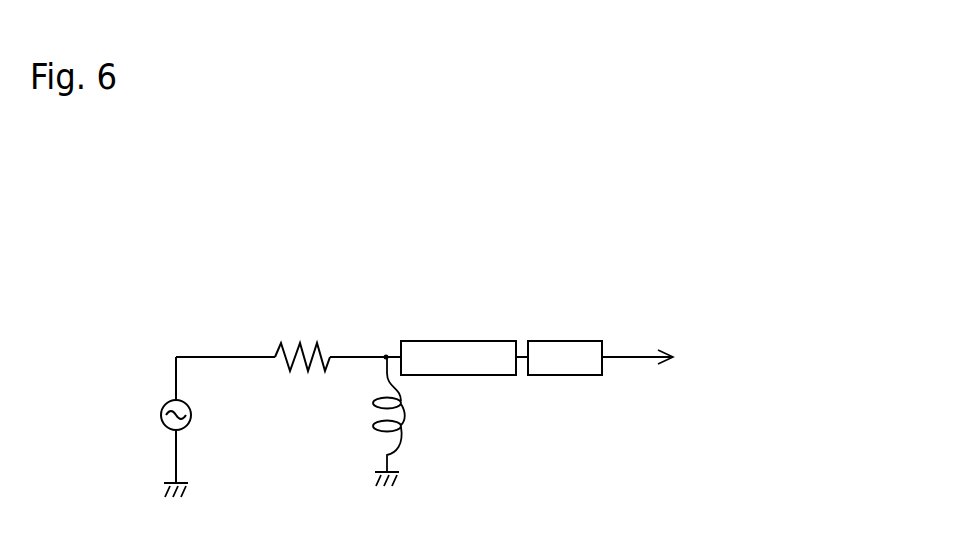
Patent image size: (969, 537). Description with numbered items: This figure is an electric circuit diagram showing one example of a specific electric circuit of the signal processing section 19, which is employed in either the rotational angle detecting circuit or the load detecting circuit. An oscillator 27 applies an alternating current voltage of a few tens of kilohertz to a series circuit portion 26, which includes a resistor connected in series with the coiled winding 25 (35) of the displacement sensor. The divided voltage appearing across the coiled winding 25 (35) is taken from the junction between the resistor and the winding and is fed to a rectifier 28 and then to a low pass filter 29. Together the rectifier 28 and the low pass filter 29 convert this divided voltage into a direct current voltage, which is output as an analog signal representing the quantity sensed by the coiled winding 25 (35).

The signal processing section 19 is at (186, 245).
The series circuit portion 26 is at (450, 230).
The oscillator 27 is at (165, 399).
The coiled winding 25 is at (378, 400).
The coiled winding 35 is at (416, 421).
The rectifier 28 is at (470, 341).
The low pass filter 29 is at (570, 341).